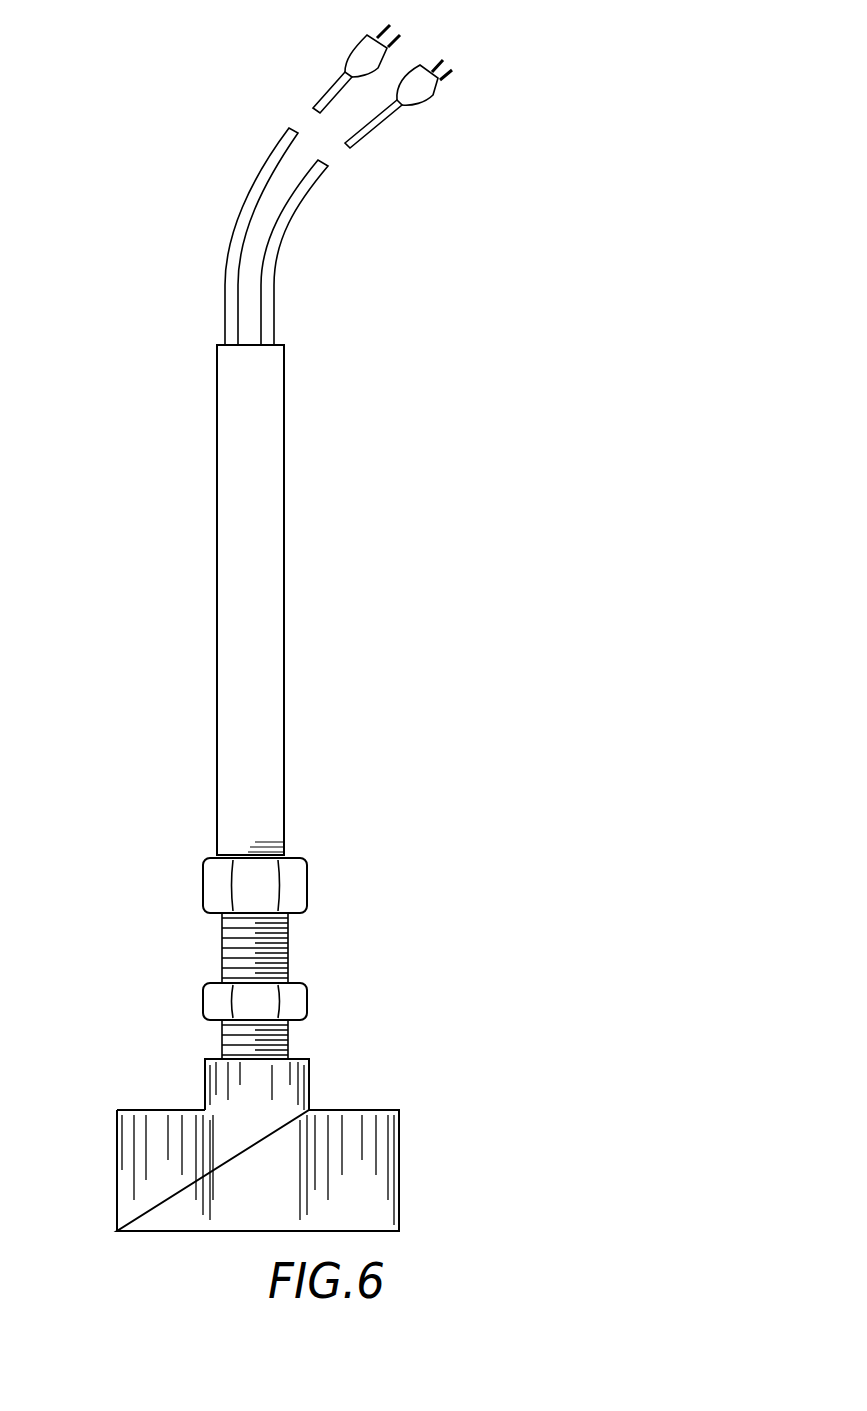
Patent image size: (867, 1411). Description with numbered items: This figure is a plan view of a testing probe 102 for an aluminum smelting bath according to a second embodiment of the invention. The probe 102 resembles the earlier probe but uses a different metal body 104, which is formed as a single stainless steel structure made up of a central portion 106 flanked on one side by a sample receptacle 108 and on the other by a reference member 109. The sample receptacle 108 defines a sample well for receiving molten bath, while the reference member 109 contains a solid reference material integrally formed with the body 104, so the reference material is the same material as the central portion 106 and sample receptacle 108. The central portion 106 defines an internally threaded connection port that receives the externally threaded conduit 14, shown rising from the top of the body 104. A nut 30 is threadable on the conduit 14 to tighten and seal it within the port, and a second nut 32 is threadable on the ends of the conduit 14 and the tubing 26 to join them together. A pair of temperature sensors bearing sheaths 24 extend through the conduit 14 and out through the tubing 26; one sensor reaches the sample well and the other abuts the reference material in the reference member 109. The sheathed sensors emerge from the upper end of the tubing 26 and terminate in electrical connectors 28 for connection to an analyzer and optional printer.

The externally threaded conduit 14 is at (222, 930).
The sheath 24 is at (232, 235).
The tubing 26 is at (285, 515).
The electrical connectors 28 is at (356, 48).
The nut 30 is at (307, 993).
The nut 32 is at (307, 878).
The testing probe 102 is at (393, 390).
The metal body 104 is at (437, 1110).
The central portion 106 is at (243, 1222).
The sample receptacle 108 is at (117, 1125).
The reference member 109 is at (399, 1158).